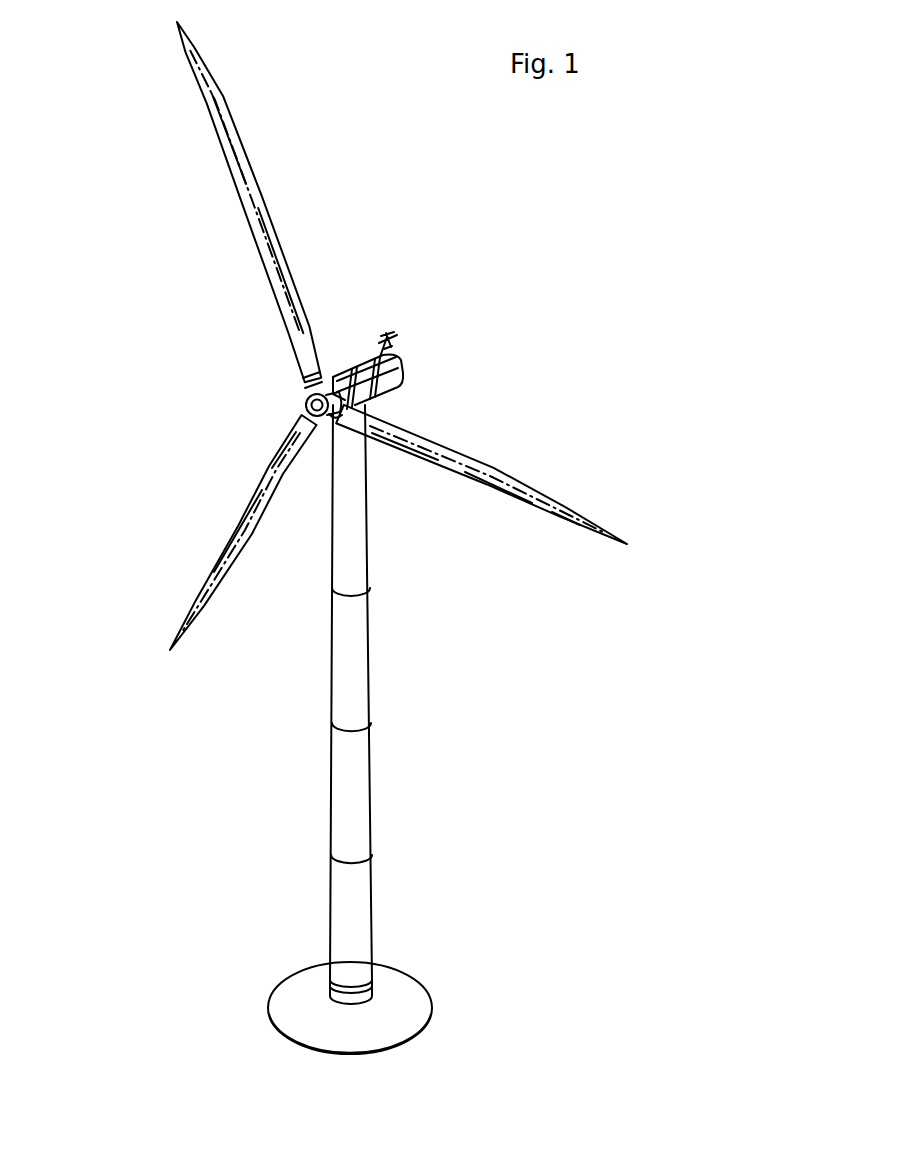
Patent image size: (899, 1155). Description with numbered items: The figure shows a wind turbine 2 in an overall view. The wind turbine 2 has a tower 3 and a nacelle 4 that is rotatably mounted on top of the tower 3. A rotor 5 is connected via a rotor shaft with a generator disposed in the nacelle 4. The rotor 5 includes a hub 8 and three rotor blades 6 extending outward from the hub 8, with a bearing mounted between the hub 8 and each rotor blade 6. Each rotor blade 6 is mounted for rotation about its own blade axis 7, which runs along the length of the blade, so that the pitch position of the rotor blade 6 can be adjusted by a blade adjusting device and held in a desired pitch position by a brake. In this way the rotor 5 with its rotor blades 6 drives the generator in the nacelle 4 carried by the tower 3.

The wind turbine 2 is at (453, 325).
The tower 3 is at (362, 797).
The nacelle 4 is at (401, 375).
The rotor 5 is at (296, 398).
The rotor blade 6 is at (304, 308).
The blade axis 7 is at (266, 210).
The hub 8 is at (331, 422).